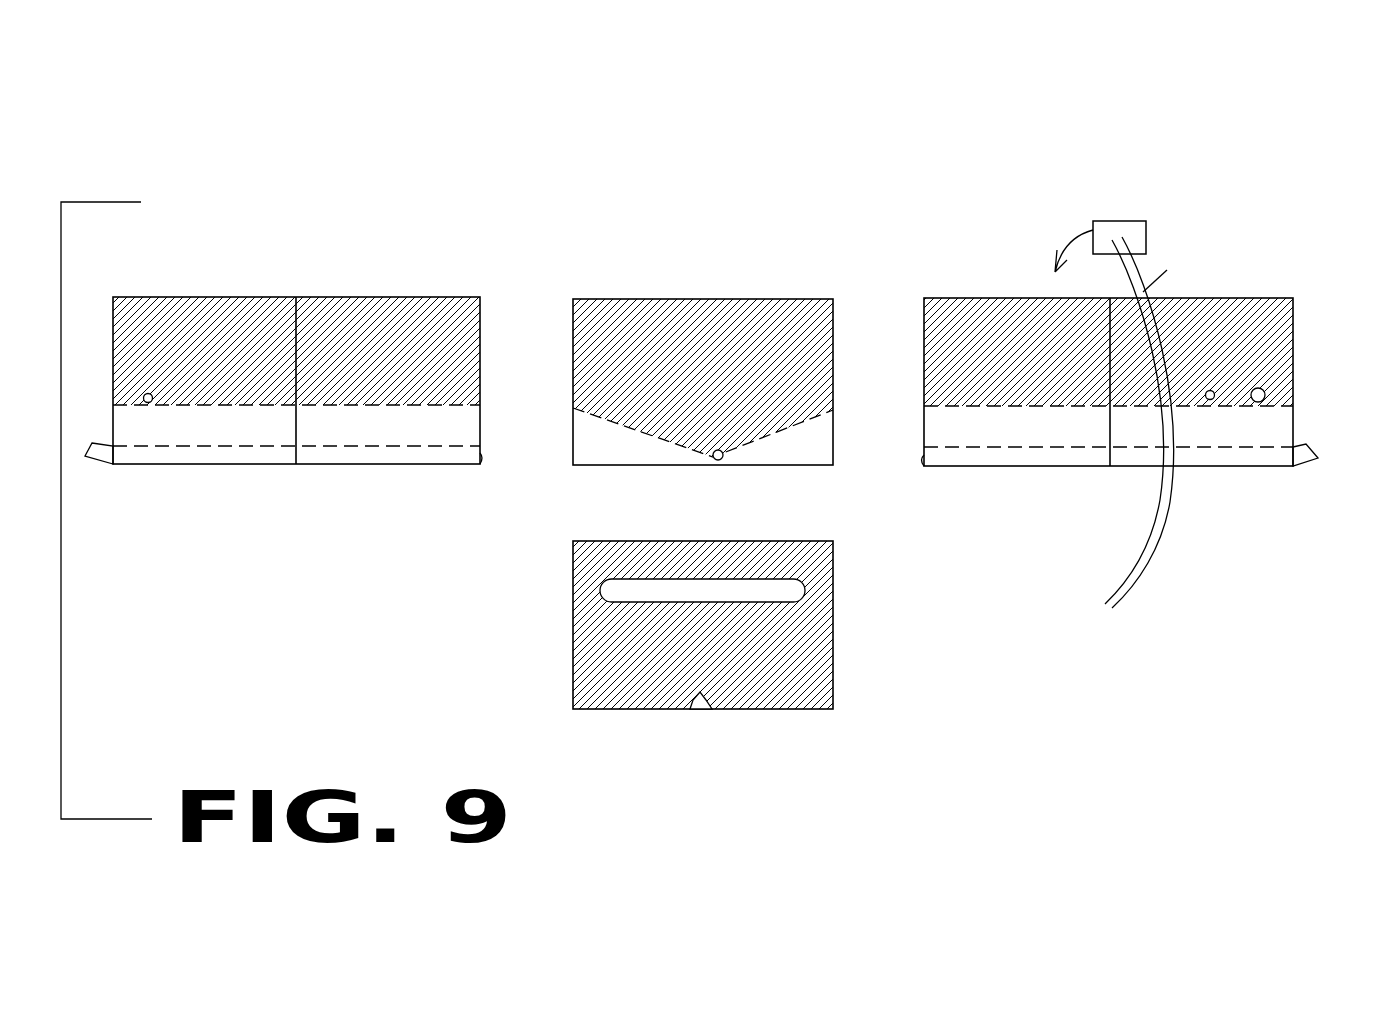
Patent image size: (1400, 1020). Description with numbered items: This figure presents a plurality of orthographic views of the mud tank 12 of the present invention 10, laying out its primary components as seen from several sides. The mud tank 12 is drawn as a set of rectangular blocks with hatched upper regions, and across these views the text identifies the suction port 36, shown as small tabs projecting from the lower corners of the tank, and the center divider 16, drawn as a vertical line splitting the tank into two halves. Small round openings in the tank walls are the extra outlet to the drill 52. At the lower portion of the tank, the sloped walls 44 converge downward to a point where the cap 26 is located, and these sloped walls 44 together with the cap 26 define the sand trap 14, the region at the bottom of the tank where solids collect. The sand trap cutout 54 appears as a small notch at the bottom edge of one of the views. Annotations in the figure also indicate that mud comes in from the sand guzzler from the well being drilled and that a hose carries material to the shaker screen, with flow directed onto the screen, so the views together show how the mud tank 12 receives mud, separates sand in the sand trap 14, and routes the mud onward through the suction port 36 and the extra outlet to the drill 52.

The present invention 10 is at (1304, 154).
The mud tank 12 is at (358, 296).
The sand trap 14 is at (943, 452).
The center divider 16 is at (294, 357).
The cap 26 is at (728, 463).
The suction port 36 is at (102, 465).
The sloped walls 44 is at (622, 425).
The extra outlet to the drill 52 is at (153, 400).
The sand trap cutout 54 is at (702, 710).